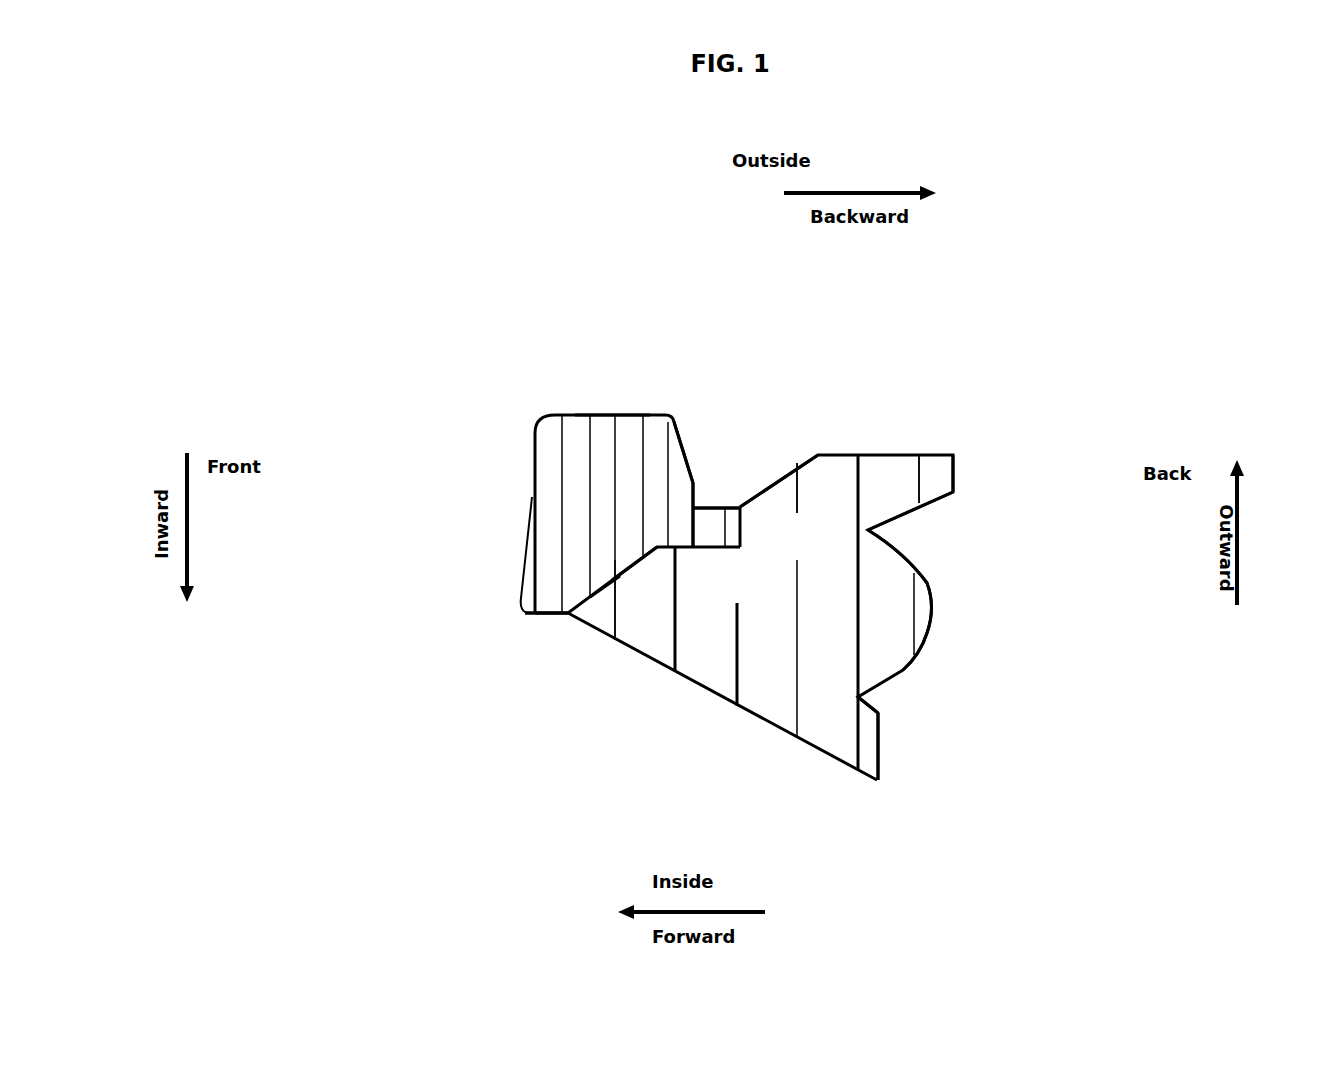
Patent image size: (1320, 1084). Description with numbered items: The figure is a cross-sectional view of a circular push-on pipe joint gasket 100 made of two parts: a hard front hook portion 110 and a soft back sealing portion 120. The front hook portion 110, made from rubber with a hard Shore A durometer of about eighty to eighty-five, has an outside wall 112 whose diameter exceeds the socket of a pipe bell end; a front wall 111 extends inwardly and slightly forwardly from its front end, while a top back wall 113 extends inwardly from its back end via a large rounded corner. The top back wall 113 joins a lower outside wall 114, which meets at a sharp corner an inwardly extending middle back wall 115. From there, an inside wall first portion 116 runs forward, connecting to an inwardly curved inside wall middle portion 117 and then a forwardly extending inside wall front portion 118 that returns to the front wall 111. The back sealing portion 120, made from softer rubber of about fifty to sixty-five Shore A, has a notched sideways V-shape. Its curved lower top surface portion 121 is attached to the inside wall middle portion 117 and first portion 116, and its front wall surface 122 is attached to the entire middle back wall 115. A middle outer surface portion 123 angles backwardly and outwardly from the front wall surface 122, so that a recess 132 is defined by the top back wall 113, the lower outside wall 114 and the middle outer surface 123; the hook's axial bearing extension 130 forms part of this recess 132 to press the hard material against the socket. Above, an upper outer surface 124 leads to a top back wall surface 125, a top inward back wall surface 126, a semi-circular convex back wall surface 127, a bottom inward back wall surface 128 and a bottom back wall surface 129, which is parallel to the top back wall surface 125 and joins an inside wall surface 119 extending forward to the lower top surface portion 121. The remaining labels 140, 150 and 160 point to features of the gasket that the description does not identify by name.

The gasket 100 is at (412, 265).
The front hook portion 110 is at (578, 485).
The front wall 111 is at (532, 507).
The outside wall 112 is at (603, 413).
The top back wall 113 is at (690, 457).
The lower outside wall 114 is at (710, 507).
The middle back wall 115 is at (733, 535).
The inside wall first portion 116 is at (693, 543).
The inside wall middle portion 117 is at (620, 568).
The inside wall front portion 118 is at (543, 602).
The inside wall surface 119 is at (840, 767).
The back sealing portion 120 is at (823, 613).
The curved lower top surface portion 121 is at (638, 550).
The front wall surface 122 is at (742, 520).
The middle outer surface portion 123 is at (793, 470).
The upper outer surface 124 is at (917, 453).
The top back wall surface 125 is at (953, 473).
The top inward back wall surface 126 is at (893, 518).
The convex back wall surface 127 is at (933, 612).
The bottom inward back wall surface 128 is at (873, 705).
The bottom back wall surface 129 is at (880, 767).
The axial bearing extension 130 is at (720, 503).
The recess 132 is at (705, 488).
The lower joint 140 is at (607, 605).
The bottom surface 150 is at (547, 602).
The junction 160 is at (615, 578).